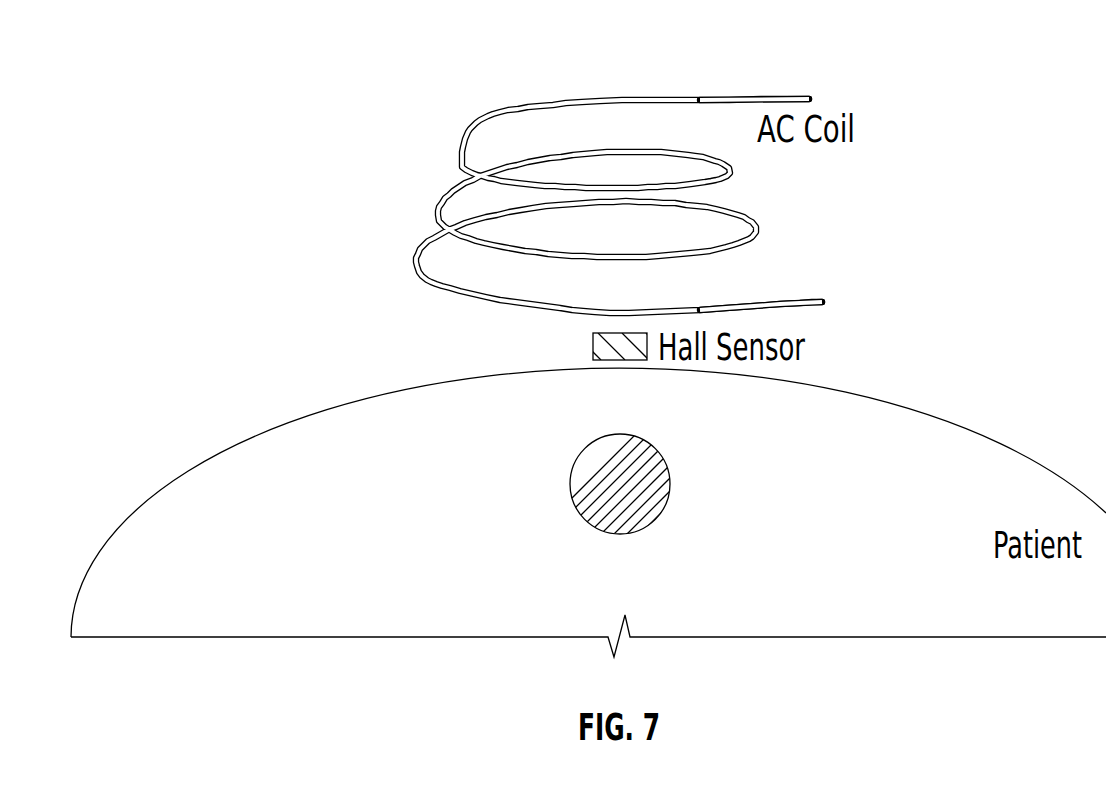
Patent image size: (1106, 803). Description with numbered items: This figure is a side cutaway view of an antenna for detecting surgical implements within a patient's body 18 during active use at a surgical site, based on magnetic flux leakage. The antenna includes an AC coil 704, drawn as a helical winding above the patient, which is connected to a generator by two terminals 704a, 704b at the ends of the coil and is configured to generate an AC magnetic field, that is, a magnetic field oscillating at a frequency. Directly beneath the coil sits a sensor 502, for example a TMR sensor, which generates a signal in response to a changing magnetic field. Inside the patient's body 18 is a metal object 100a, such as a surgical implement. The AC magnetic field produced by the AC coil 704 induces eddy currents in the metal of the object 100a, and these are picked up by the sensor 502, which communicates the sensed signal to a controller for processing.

The AC coil 704 is at (498, 111).
The terminal 704a is at (746, 95).
The terminal 704b is at (788, 301).
The sensor 502 is at (592, 343).
The patient body 18 is at (137, 510).
The object 100a is at (571, 497).